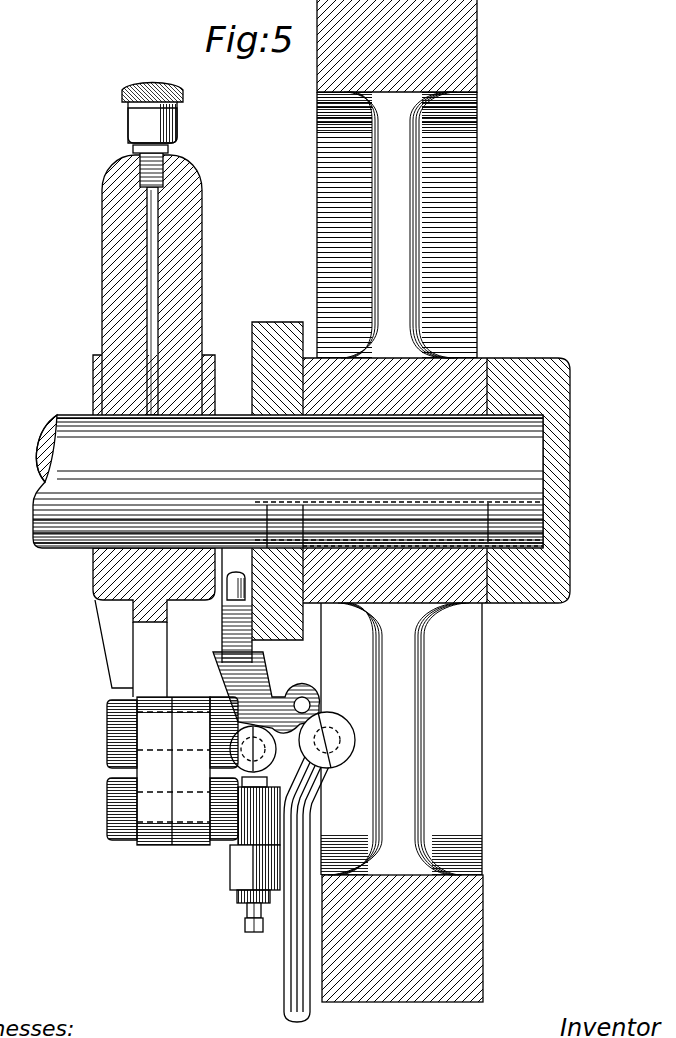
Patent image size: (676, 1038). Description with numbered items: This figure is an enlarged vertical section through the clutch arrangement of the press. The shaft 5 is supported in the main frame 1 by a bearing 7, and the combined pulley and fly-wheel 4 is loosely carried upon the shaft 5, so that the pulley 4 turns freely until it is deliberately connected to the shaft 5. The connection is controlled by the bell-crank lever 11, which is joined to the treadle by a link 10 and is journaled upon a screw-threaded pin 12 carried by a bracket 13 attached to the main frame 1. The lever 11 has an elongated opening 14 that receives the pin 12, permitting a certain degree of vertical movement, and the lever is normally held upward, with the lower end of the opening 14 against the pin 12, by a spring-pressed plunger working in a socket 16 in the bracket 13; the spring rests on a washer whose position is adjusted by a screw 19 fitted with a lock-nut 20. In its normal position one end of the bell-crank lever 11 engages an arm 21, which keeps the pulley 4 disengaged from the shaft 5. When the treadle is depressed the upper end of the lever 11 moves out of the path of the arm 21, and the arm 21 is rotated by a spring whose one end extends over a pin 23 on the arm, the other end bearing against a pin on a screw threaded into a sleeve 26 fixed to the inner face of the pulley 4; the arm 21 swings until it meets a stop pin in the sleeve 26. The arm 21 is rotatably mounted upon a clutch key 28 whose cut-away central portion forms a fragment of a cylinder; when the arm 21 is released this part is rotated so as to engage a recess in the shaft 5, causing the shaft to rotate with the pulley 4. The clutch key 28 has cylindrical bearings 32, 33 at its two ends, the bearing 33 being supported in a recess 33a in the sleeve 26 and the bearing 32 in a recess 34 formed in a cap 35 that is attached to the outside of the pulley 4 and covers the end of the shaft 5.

The main frame 1 is at (112, 580).
The combined pulley and fly-wheel 4 is at (463, 708).
The shaft 5 is at (530, 445).
The bearing 7 is at (188, 260).
The link 10 is at (290, 973).
The bell-crank lever 11 is at (258, 678).
The screw-threaded pin 12 is at (273, 767).
The bracket 13 is at (193, 840).
The elongated opening 14 is at (308, 702).
The socket 16 is at (238, 872).
The screw 19 is at (245, 930).
The lock-nut 20 is at (242, 896).
The arm 21 is at (227, 632).
The pin 23 is at (227, 592).
The sleeve 26 is at (262, 322).
The clutch key 28 is at (516, 512).
The cylindrical bearing 32 is at (570, 528).
The cylindrical bearing 33 is at (303, 548).
The recess 33a is at (320, 605).
The recess 34 is at (545, 538).
The cap 35 is at (555, 472).